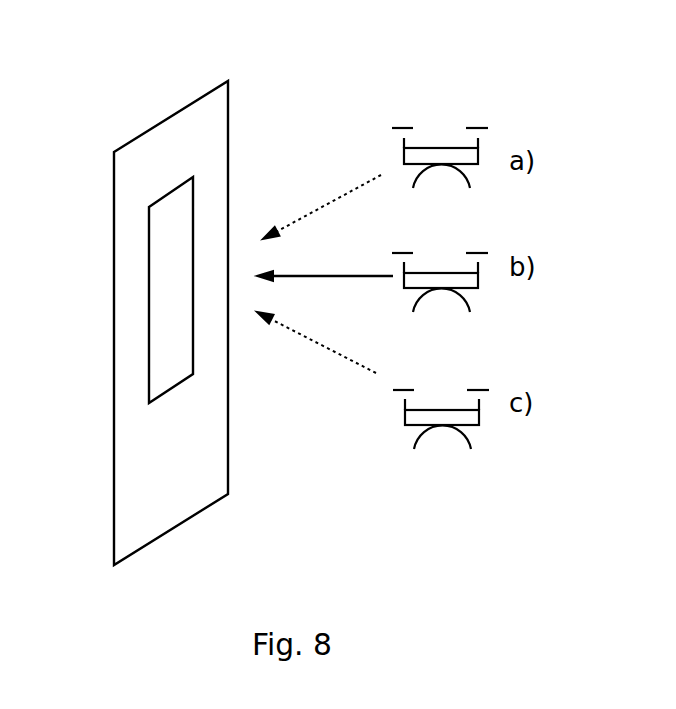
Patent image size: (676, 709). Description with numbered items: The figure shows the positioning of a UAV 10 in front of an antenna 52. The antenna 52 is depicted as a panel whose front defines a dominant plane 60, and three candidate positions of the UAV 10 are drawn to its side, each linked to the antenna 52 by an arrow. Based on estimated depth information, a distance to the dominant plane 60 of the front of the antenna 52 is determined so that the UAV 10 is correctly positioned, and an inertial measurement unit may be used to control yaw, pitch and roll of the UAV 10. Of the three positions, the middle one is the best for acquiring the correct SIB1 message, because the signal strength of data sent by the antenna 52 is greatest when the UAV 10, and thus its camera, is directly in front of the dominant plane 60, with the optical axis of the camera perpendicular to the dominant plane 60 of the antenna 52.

The dominant plane 60 is at (219, 98).
The antenna 52 is at (150, 260).
The UAV 10 is at (434, 142).